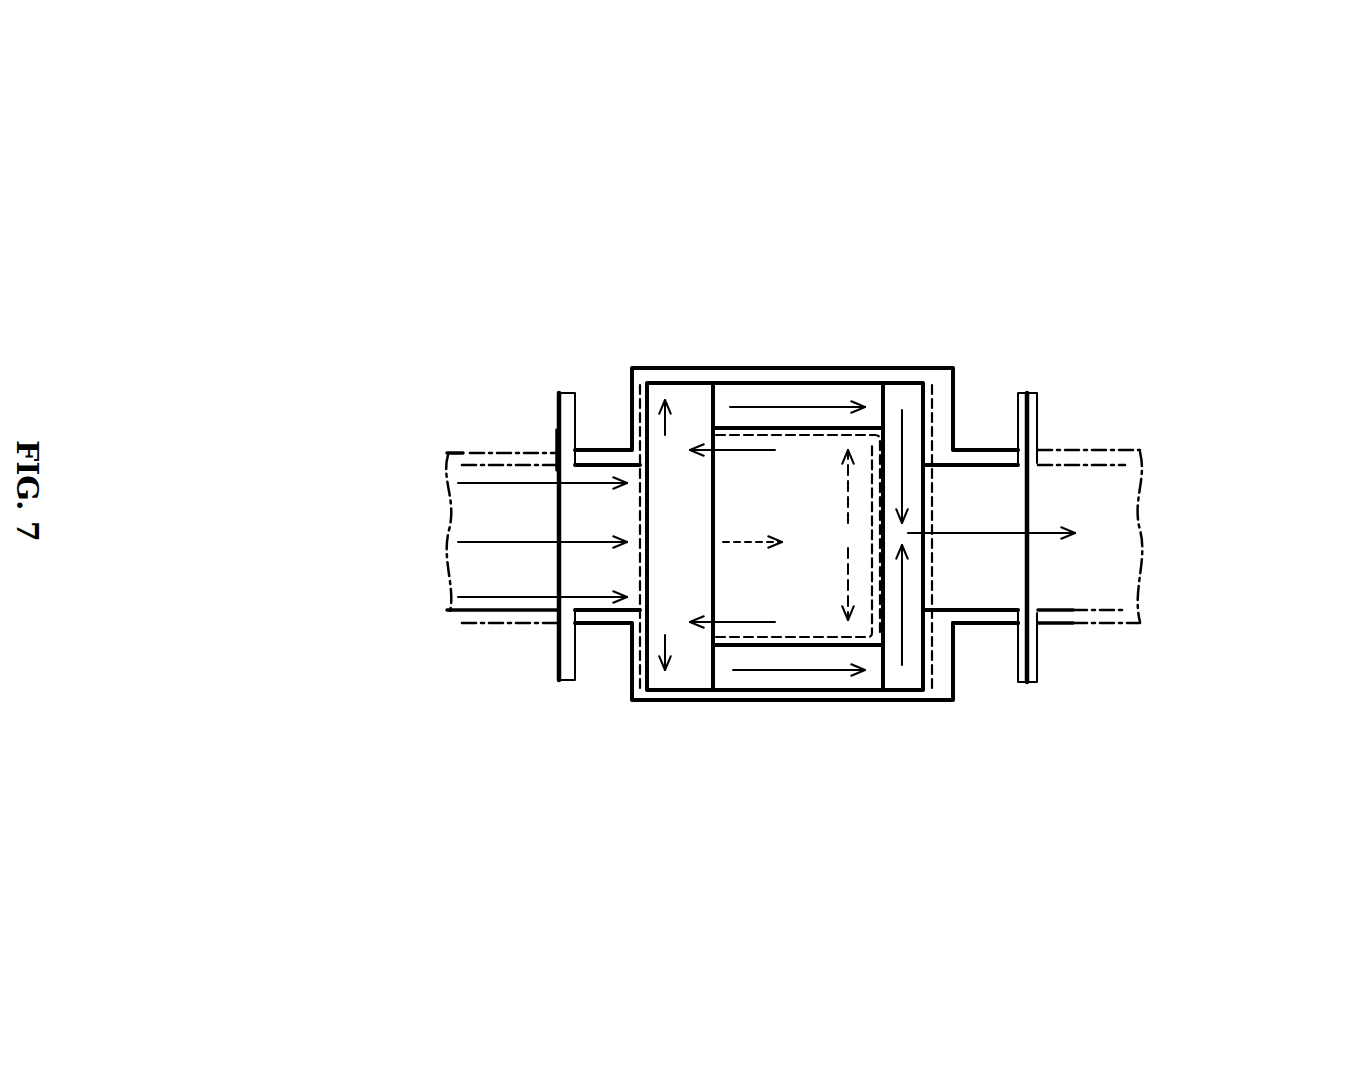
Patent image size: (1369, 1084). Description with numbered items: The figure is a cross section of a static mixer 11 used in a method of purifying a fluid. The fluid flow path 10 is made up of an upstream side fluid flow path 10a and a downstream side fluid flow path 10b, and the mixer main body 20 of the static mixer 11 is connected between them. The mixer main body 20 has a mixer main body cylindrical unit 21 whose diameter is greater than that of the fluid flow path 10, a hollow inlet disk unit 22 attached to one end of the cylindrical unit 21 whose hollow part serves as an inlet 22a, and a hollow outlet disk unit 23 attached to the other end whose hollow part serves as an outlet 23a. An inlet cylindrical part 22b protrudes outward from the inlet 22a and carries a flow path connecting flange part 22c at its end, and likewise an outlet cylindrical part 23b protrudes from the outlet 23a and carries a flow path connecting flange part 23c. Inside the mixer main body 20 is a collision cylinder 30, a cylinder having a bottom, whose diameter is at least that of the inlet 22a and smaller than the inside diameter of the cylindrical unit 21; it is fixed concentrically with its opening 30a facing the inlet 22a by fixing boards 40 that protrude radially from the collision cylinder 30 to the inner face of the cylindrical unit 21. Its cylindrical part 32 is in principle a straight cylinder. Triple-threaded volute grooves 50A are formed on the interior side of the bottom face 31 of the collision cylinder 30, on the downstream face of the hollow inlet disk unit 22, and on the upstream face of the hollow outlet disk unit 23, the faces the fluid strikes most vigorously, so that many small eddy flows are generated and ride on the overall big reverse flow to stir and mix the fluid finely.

The fluid flow path 10 is at (470, 625).
The upstream side fluid flow path 10a is at (470, 455).
The downstream side fluid flow path 10b is at (1130, 457).
The static mixer 11 is at (1198, 277).
The mixer main body 20 is at (667, 367).
The mixer main body cylindrical unit 21 is at (706, 378).
The hollow inlet disk unit 22 is at (588, 623).
The inlet 22a is at (645, 505).
The inlet cylindrical part 22b is at (603, 455).
The flow path connecting flange part 22c is at (555, 410).
The hollow outlet disk unit 23 is at (983, 443).
The outlet 23a is at (925, 563).
The outlet cylindrical part 23b is at (987, 625).
The flow path connecting flange part 23c is at (1030, 437).
The collision cylinder 30 is at (710, 688).
The opening 30a is at (718, 470).
The bottom face 31 is at (886, 630).
The cylindrical part 32 is at (750, 648).
The fixing boards 40 is at (728, 393).
The volute grooves 50A is at (890, 440).